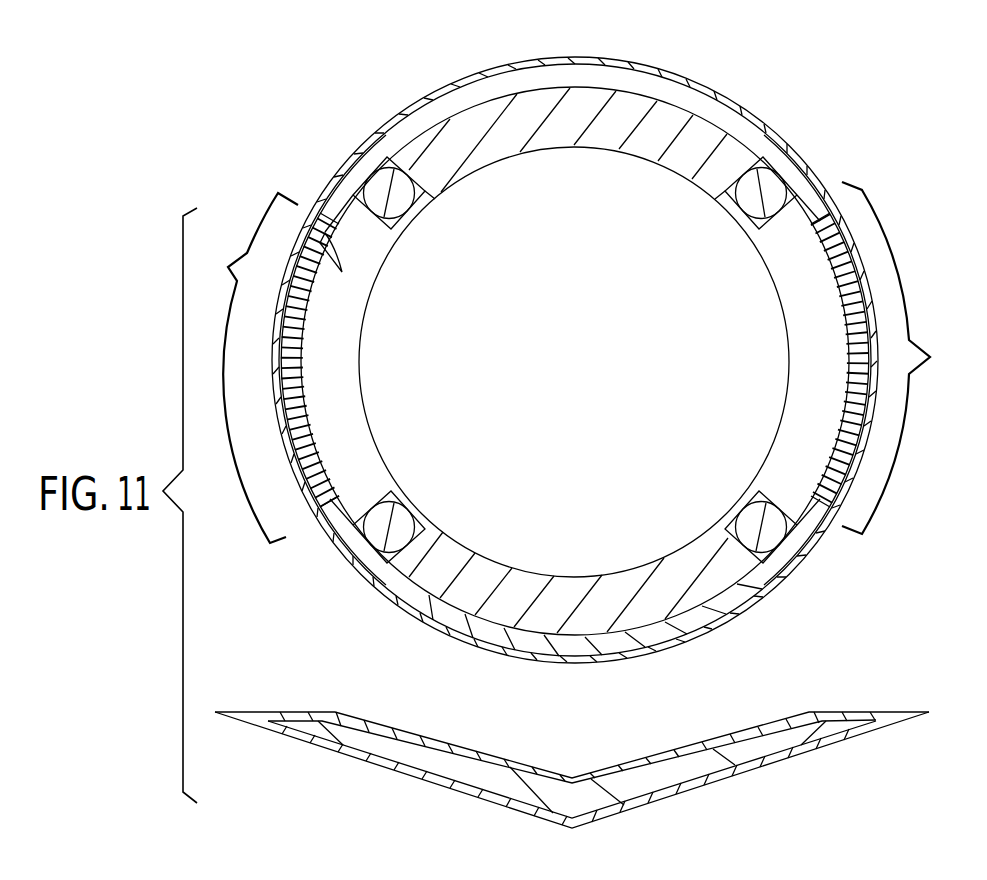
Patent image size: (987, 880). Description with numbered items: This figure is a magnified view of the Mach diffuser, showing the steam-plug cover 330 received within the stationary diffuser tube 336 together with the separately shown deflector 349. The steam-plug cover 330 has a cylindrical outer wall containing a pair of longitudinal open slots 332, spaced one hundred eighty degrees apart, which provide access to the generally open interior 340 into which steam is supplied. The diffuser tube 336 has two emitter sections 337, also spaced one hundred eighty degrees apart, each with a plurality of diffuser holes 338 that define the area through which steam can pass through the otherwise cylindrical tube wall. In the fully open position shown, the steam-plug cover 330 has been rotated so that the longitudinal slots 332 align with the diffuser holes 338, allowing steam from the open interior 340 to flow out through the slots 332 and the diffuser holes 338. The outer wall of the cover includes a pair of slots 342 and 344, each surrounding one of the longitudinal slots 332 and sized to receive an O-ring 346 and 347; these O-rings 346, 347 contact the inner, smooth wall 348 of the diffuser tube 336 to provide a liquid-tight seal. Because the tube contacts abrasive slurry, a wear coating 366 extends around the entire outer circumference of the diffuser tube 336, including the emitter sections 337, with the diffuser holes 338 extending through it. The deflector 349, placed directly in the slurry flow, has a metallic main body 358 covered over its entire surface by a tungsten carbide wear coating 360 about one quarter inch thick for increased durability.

The steam-plug cover 330 is at (732, 148).
The longitudinal open slots 332 is at (350, 333).
The diffuser tube 336 is at (618, 78).
The emitter sections 337 is at (581, 362).
The diffuser holes 338 is at (342, 273).
The open interior 340 is at (636, 192).
The slot 342 is at (727, 185).
The slot 344 is at (428, 180).
The O-ring 346 is at (778, 190).
The O-ring 347 is at (374, 173).
The inner, smooth wall 348 is at (630, 628).
The deflector 349 is at (572, 770).
The main body 358 is at (467, 762).
The wear coating 360 is at (618, 810).
The wear coating 366 is at (712, 637).